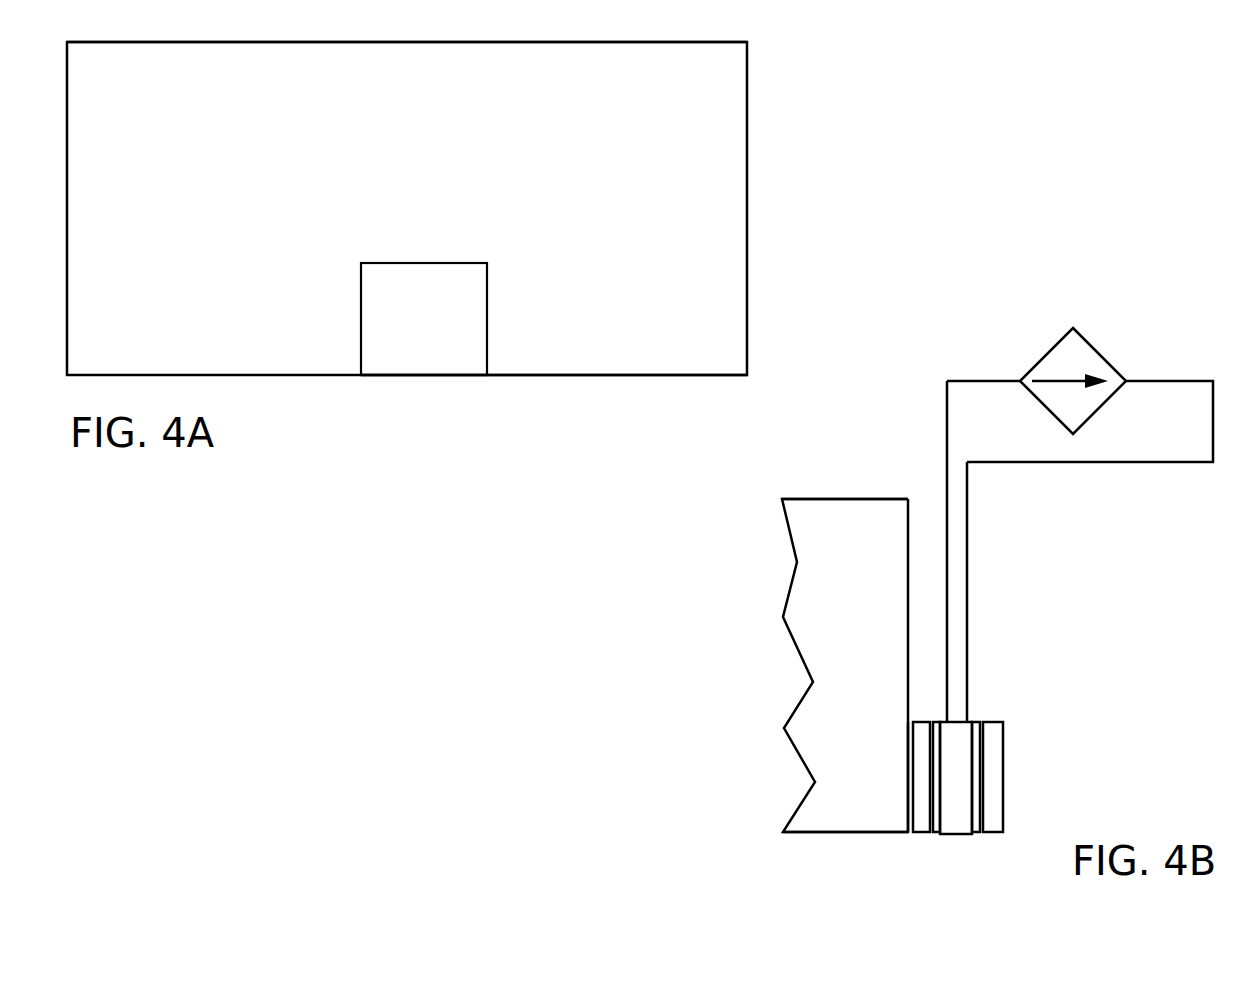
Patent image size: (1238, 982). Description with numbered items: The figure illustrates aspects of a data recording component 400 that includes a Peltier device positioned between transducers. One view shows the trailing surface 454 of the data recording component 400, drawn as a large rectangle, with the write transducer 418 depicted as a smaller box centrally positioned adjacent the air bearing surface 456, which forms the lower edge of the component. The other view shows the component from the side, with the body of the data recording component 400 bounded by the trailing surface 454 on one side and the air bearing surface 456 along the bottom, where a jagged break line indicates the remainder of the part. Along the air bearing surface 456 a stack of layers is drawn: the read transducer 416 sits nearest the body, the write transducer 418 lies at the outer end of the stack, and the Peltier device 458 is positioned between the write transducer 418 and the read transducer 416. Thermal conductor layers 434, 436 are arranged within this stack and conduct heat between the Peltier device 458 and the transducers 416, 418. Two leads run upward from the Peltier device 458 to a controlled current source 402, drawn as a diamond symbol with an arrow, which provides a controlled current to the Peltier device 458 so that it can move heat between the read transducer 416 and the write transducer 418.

In FIG. 4A, the data recording component 400 is at (795, 156).
In FIG. 4B, the data recording component 400 is at (730, 596).
In FIG. 4B, the controlled current source 402 is at (1103, 355).
In FIG. 4B, the read transducer 416 is at (922, 833).
In FIG. 4A, the write transducer 418 is at (450, 326).
In FIG. 4B, the write transducer 418 is at (1003, 773).
In FIG. 4B, the thermal conductor layer 434 is at (975, 722).
In FIG. 4B, the thermal conductor layer 436 is at (933, 722).
In FIG. 4A, the trailing surface 454 is at (608, 129).
In FIG. 4B, the trailing surface 454 is at (908, 540).
In FIG. 4A, the air bearing surface 456 is at (507, 375).
In FIG. 4B, the air bearing surface 456 is at (808, 833).
In FIG. 4B, the Peltier device 458 is at (950, 834).